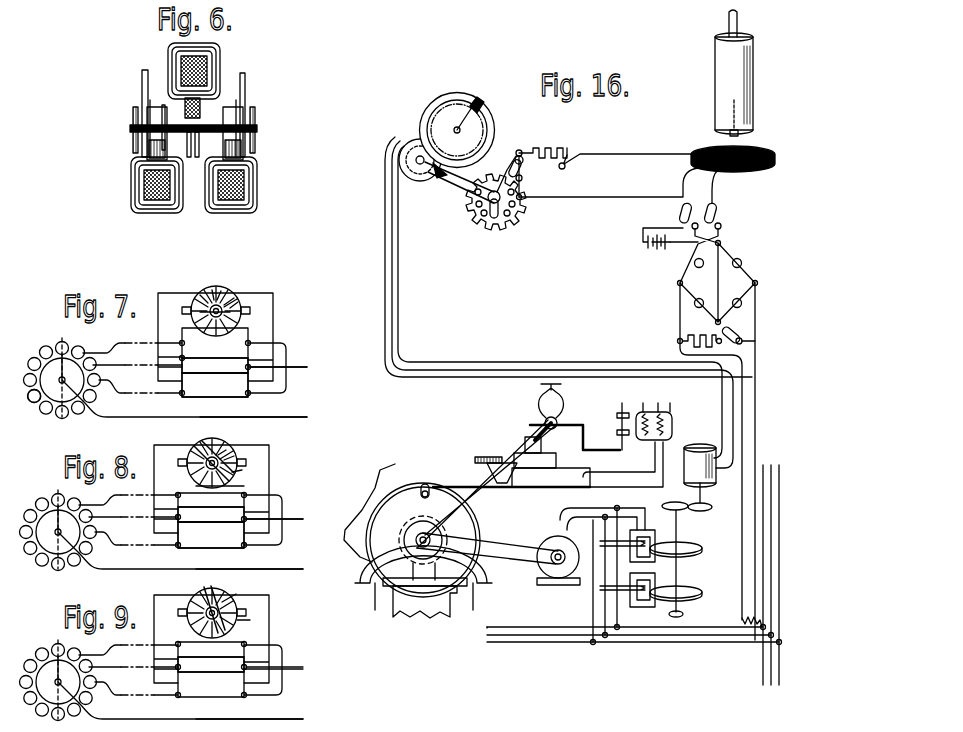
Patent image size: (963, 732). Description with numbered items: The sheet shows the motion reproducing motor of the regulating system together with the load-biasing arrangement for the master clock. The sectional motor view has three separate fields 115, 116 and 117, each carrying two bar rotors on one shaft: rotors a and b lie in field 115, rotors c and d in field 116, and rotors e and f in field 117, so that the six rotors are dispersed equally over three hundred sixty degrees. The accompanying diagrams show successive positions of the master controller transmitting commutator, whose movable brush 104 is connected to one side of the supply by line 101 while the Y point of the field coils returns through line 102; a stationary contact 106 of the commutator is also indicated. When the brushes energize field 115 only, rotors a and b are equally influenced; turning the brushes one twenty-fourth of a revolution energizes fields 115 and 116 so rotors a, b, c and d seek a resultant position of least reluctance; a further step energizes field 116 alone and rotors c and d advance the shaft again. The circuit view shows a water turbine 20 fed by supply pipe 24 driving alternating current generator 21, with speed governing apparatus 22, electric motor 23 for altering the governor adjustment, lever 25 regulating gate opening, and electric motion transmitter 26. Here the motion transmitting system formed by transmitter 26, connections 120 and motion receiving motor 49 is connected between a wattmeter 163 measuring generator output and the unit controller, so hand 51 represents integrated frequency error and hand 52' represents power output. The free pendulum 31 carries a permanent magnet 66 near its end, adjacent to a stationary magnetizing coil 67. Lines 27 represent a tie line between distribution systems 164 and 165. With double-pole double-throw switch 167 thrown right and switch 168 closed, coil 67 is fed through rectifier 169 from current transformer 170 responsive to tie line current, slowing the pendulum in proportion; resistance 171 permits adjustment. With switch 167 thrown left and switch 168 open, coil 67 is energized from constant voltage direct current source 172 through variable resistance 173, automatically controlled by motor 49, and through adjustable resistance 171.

In FIG. 6, the field 116 is at (222, 48).
In FIG. 7, the field 116 is at (215, 366).
In FIG. 8, the field 116 is at (211, 515).
In FIG. 9, the field 116 is at (211, 665).
In FIG. 6, the field 117 is at (131, 187).
In FIG. 7, the field 117 is at (215, 362).
In FIG. 8, the field 117 is at (211, 521).
In FIG. 6, the field 115 is at (258, 187).
In FIG. 7, the field 115 is at (215, 385).
In FIG. 8, the field 115 is at (211, 535).
In FIG. 6, the rotor a is at (236, 100).
In FIG. 7, the rotor a is at (240, 320).
In FIG. 8, the rotor a is at (250, 486).
In FIG. 6, the rotor b is at (232, 107).
In FIG. 7, the rotor b is at (238, 302).
In FIG. 8, the rotor b is at (242, 470).
In FIG. 6, the rotor c is at (189, 157).
In FIG. 7, the rotor c is at (234, 298).
In FIG. 8, the rotor c is at (234, 456).
In FIG. 9, the rotor c is at (252, 620).
In FIG. 6, the rotor d is at (197, 157).
In FIG. 7, the rotor d is at (221, 291).
In FIG. 8, the rotor d is at (226, 450).
In FIG. 9, the rotor d is at (236, 594).
In FIG. 6, the rotor e is at (158, 107).
In FIG. 7, the rotor e is at (212, 290).
In FIG. 9, the rotor e is at (257, 730).
In FIG. 6, the rotor f is at (150, 100).
In FIG. 7, the rotor f is at (200, 295).
In FIG. 9, the rotor f is at (236, 729).
In FIG. 7, the line 101 is at (304, 417).
In FIG. 7, the line 102 is at (305, 367).
In FIG. 7, the movable brush 104 is at (66, 419).
In FIG. 7, the commutator segment 106 is at (41, 406).
In FIG. 16, the motion transmitting system 120 is at (460, 379).
In FIG. 16, the free pendulum 31 is at (728, 20).
In FIG. 16, the permanent magnet 66 is at (730, 115).
In FIG. 16, the magnetizing coil 67 is at (762, 173).
In FIG. 16, the resistance 171 is at (557, 149).
In FIG. 16, the switch 168 is at (527, 176).
In FIG. 16, the motion receiving motor 49 is at (412, 144).
In FIG. 16, the hand 51 is at (457, 120).
In FIG. 16, the hand 52' is at (497, 111).
In FIG. 16, the variable resistance 173 is at (498, 233).
In FIG. 16, the double-pole double-throw switch 167 is at (720, 210).
In FIG. 16, the constant voltage direct current source 172 is at (652, 247).
In FIG. 16, the rectifier 169 is at (692, 294).
In FIG. 16, the current transformer 170 is at (742, 624).
In FIG. 16, the distribution system 165 is at (762, 677).
In FIG. 16, the tie line 27 is at (533, 643).
In FIG. 16, the distribution system 164 is at (485, 629).
In FIG. 16, the electric motion transmitter 26 is at (698, 447).
In FIG. 16, the wattmeter 163 is at (683, 568).
In FIG. 16, the electric motor 23 is at (673, 422).
In FIG. 16, the speed governing apparatus 22 is at (540, 466).
In FIG. 16, the water turbine 20 is at (423, 540).
In FIG. 16, the lever 25 is at (427, 483).
In FIG. 16, the supply pipe 24 is at (376, 495).
In FIG. 16, the alternating current generator 21 is at (545, 570).